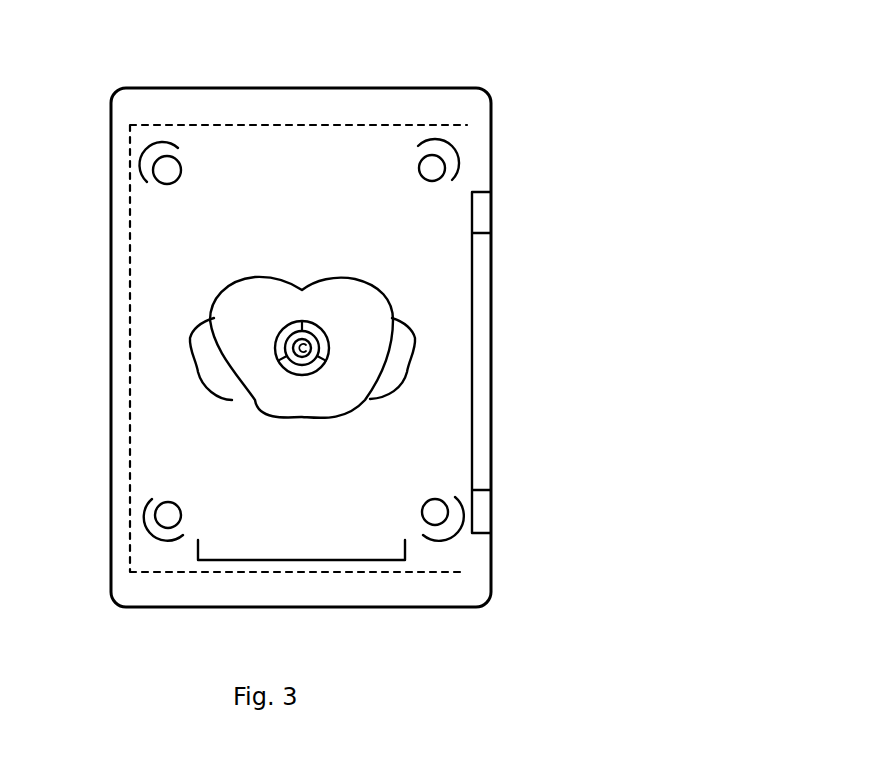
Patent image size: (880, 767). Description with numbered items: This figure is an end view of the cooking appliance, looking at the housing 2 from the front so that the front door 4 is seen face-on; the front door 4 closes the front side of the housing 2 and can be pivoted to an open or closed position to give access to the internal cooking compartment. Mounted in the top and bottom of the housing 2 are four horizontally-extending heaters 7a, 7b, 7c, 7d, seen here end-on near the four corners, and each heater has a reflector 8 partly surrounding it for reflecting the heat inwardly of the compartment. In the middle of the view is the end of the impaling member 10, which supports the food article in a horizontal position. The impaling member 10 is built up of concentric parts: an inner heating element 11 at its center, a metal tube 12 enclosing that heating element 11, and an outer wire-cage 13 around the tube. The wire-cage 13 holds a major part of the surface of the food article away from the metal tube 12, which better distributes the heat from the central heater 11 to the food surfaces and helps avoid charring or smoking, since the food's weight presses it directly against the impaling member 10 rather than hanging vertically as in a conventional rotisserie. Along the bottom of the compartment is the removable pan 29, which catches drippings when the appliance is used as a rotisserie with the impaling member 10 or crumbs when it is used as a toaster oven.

The housing 2 is at (492, 88).
The front door 4 is at (480, 350).
The heater 7a is at (167, 185).
The heater 7b is at (419, 176).
The heater 7c is at (170, 502).
The heater 7d is at (422, 500).
The reflector 8 is at (150, 152).
The impaling member 10 is at (276, 383).
The inner heating element 11 is at (306, 349).
The metal tube 12 is at (327, 337).
The outer wire-cage 13 is at (313, 323).
The removable pan 29 is at (275, 558).